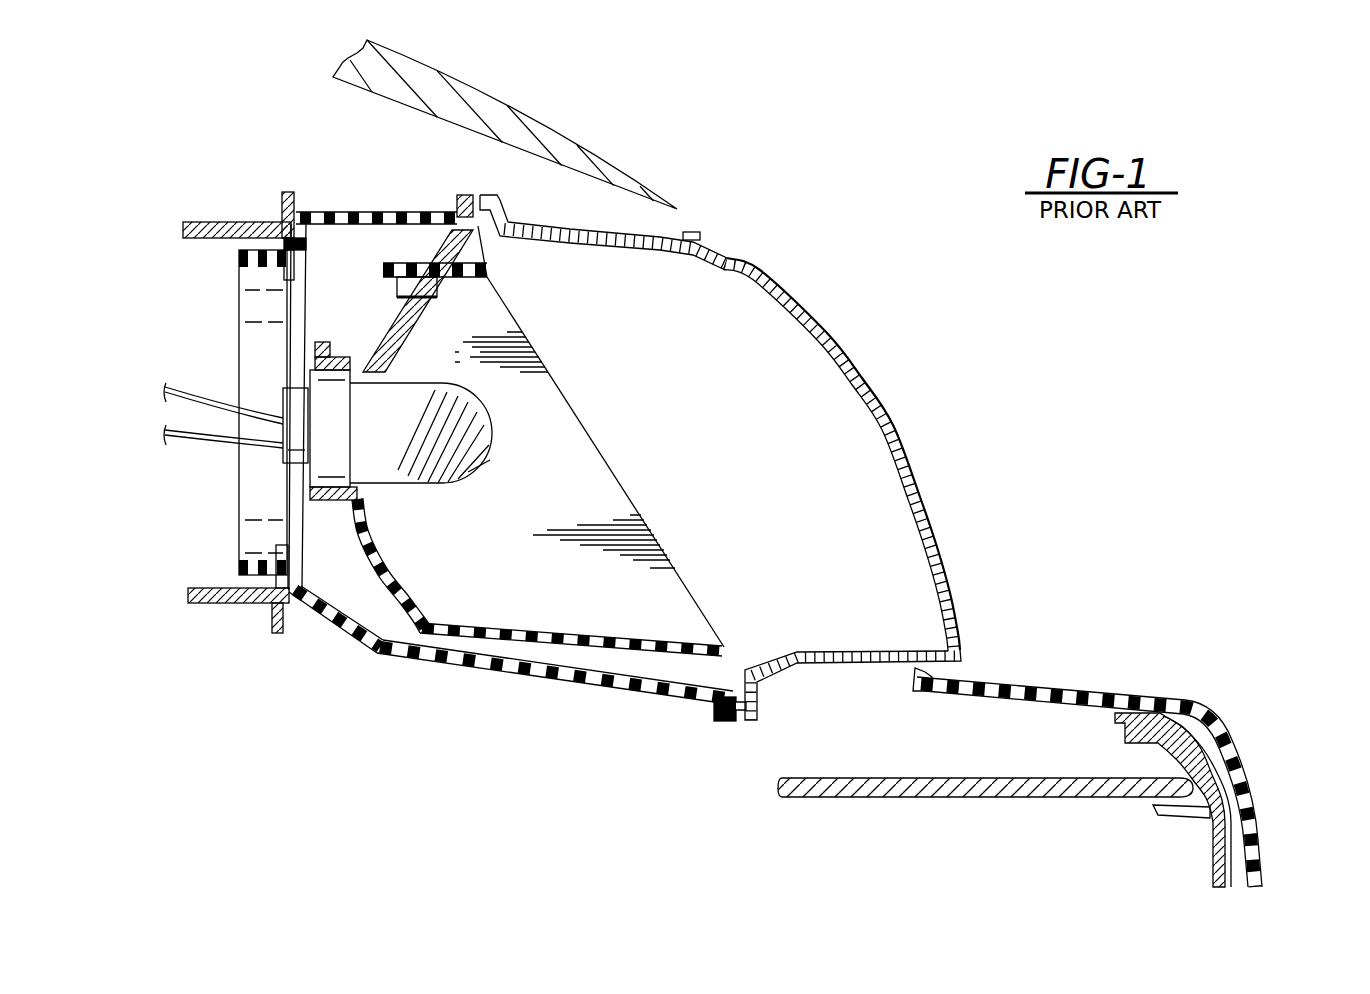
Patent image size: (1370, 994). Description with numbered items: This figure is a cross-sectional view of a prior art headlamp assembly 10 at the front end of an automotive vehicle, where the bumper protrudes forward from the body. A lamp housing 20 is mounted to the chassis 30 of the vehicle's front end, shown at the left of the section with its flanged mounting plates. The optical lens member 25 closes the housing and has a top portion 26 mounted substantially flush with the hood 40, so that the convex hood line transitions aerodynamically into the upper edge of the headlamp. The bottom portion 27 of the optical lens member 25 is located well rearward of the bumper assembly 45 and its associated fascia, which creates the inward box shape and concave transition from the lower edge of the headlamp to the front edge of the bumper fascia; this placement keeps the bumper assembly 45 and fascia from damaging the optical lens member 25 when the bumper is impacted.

The prior art lamp assembly 10 is at (281, 149).
The lamp housing 20 is at (340, 633).
The optical lens member 25 is at (923, 498).
The top portion 26 is at (685, 237).
The bottom portion 27 is at (962, 652).
The chassis 30 is at (199, 222).
The hood 40 is at (593, 152).
The bumper assembly 45 is at (1255, 748).